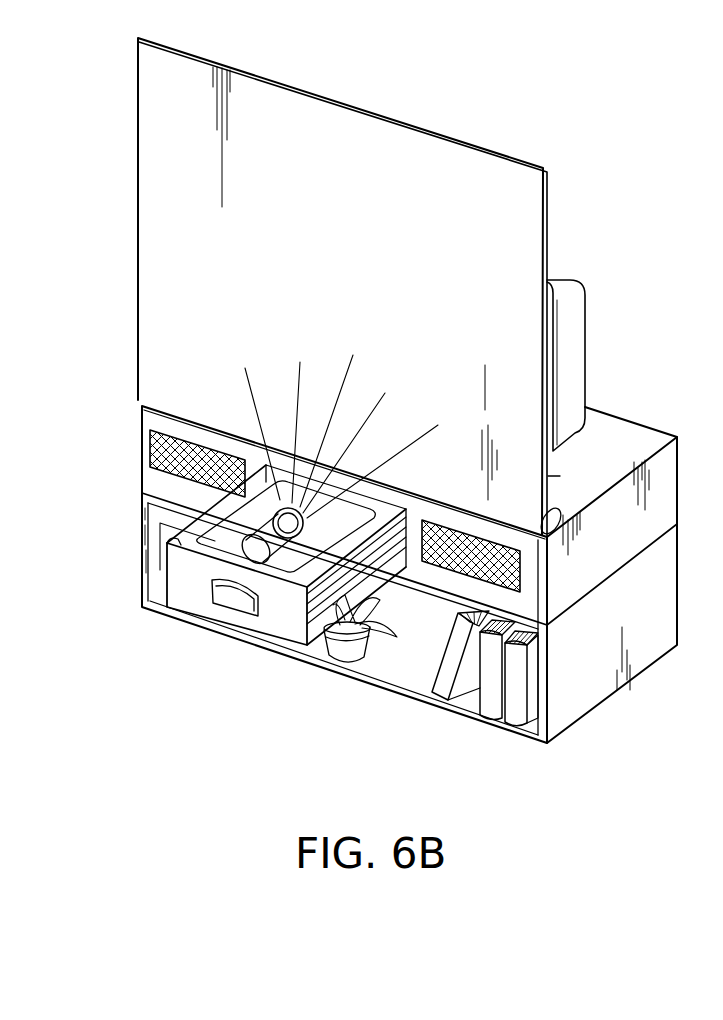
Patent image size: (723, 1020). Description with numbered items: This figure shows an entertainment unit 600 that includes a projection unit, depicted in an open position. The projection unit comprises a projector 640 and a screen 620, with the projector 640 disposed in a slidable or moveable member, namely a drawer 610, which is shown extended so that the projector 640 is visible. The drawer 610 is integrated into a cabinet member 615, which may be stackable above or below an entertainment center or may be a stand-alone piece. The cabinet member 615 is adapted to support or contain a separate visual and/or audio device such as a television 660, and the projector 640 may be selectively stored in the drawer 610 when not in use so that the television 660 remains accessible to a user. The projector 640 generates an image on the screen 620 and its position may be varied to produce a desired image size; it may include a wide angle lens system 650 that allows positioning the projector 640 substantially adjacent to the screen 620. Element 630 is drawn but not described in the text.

The entertainment unit 600 is at (110, 188).
The drawer 610 is at (182, 592).
The cabinet member 615 is at (593, 582).
The screen 620 is at (314, 265).
The vent grille 630 is at (490, 567).
The projector 640 is at (320, 580).
The wide angle lens system 650 is at (152, 459).
The television 660 is at (563, 322).